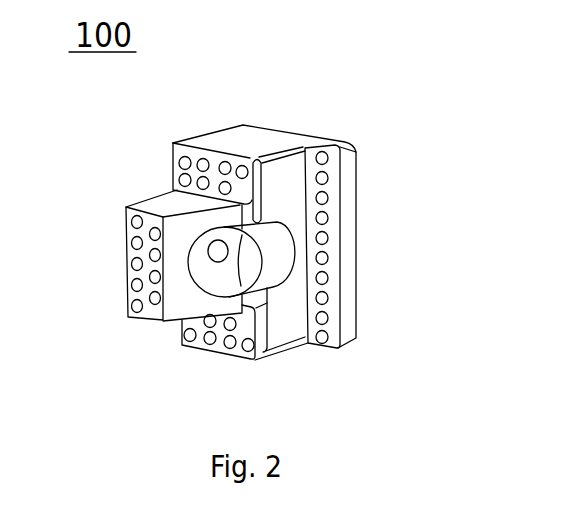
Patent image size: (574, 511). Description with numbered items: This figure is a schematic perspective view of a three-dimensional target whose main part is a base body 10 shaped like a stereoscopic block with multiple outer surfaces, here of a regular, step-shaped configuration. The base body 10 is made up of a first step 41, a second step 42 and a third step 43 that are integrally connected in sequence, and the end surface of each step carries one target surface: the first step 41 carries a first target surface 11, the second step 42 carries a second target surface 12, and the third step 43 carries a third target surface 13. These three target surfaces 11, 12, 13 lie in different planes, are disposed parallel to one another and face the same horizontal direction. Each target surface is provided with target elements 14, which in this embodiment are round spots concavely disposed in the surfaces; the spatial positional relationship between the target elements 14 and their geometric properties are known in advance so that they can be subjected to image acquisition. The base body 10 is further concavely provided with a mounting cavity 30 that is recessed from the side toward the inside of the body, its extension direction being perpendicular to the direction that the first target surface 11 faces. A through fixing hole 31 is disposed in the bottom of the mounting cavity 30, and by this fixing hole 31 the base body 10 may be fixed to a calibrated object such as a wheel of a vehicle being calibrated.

The base body 10 is at (307, 112).
The first target surface 11 is at (138, 252).
The second target surface 12 is at (183, 168).
The third target surface 13 is at (328, 248).
The target elements 14 is at (140, 287).
The mounting cavity 30 is at (267, 255).
The fixing hole 31 is at (221, 256).
The first step 41 is at (164, 205).
The second step 42 is at (212, 143).
The third step 43 is at (347, 185).